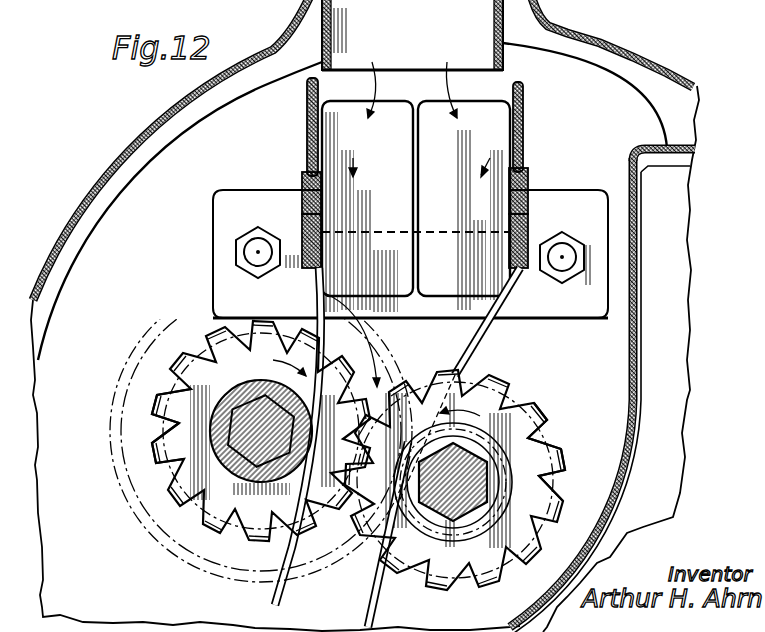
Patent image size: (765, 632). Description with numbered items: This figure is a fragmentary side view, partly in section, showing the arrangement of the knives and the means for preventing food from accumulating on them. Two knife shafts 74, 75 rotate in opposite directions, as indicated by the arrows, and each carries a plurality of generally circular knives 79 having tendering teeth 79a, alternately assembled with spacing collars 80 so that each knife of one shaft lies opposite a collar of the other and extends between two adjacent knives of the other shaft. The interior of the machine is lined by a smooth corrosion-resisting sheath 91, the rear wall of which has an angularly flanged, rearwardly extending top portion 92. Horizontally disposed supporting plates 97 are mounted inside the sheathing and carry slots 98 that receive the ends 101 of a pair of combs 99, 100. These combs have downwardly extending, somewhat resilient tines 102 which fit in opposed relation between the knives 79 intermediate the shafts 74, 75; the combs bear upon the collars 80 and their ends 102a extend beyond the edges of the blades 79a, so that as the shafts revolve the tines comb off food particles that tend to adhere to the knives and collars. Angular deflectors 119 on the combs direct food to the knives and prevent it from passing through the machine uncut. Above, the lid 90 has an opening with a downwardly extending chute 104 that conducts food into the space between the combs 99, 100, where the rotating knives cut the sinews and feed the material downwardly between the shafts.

The knife shaft 74 is at (483, 470).
The knife shaft 75 is at (233, 387).
The knife 79 is at (205, 430).
The tendering teeth 79a is at (562, 393).
The spacing collar 80 is at (218, 450).
The lid 90 is at (135, 146).
The sheath 91 is at (607, 500).
The top portion 92 is at (643, 147).
The supporting plate 97 is at (217, 196).
The slot 98 is at (303, 208).
The comb 99 is at (306, 139).
The comb 100 is at (524, 155).
The comb end 101 is at (305, 178).
The tine 102 is at (319, 280).
The tine end 102a is at (281, 594).
The chute 104 is at (332, 22).
The deflector 119 is at (323, 146).